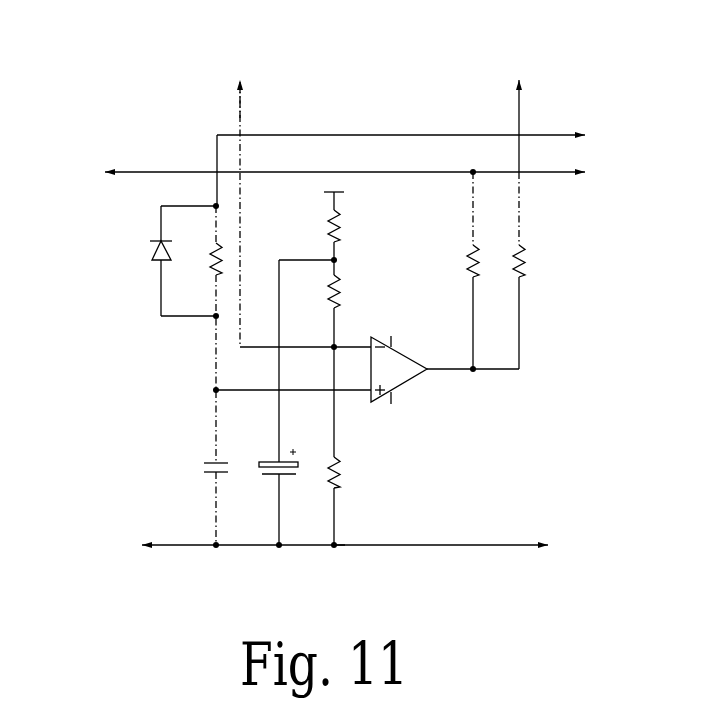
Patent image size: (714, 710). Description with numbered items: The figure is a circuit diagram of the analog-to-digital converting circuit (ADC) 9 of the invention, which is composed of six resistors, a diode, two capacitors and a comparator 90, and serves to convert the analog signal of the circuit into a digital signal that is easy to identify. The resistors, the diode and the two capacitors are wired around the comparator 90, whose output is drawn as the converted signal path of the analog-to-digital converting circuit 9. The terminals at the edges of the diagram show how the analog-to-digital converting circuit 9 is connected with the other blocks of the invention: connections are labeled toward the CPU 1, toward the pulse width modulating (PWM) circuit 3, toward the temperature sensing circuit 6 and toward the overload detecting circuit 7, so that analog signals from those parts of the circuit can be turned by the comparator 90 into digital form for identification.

The analog-to-digital converting circuit (ADC) 9 is at (152, 103).
The pulse width modulating (PWM) circuit 3 is at (241, 79).
The CPU 1 is at (419, 102).
The overload detecting circuit 7 is at (211, 354).
The temperature sensing circuit 6 is at (478, 360).
The comparator 90 is at (398, 375).